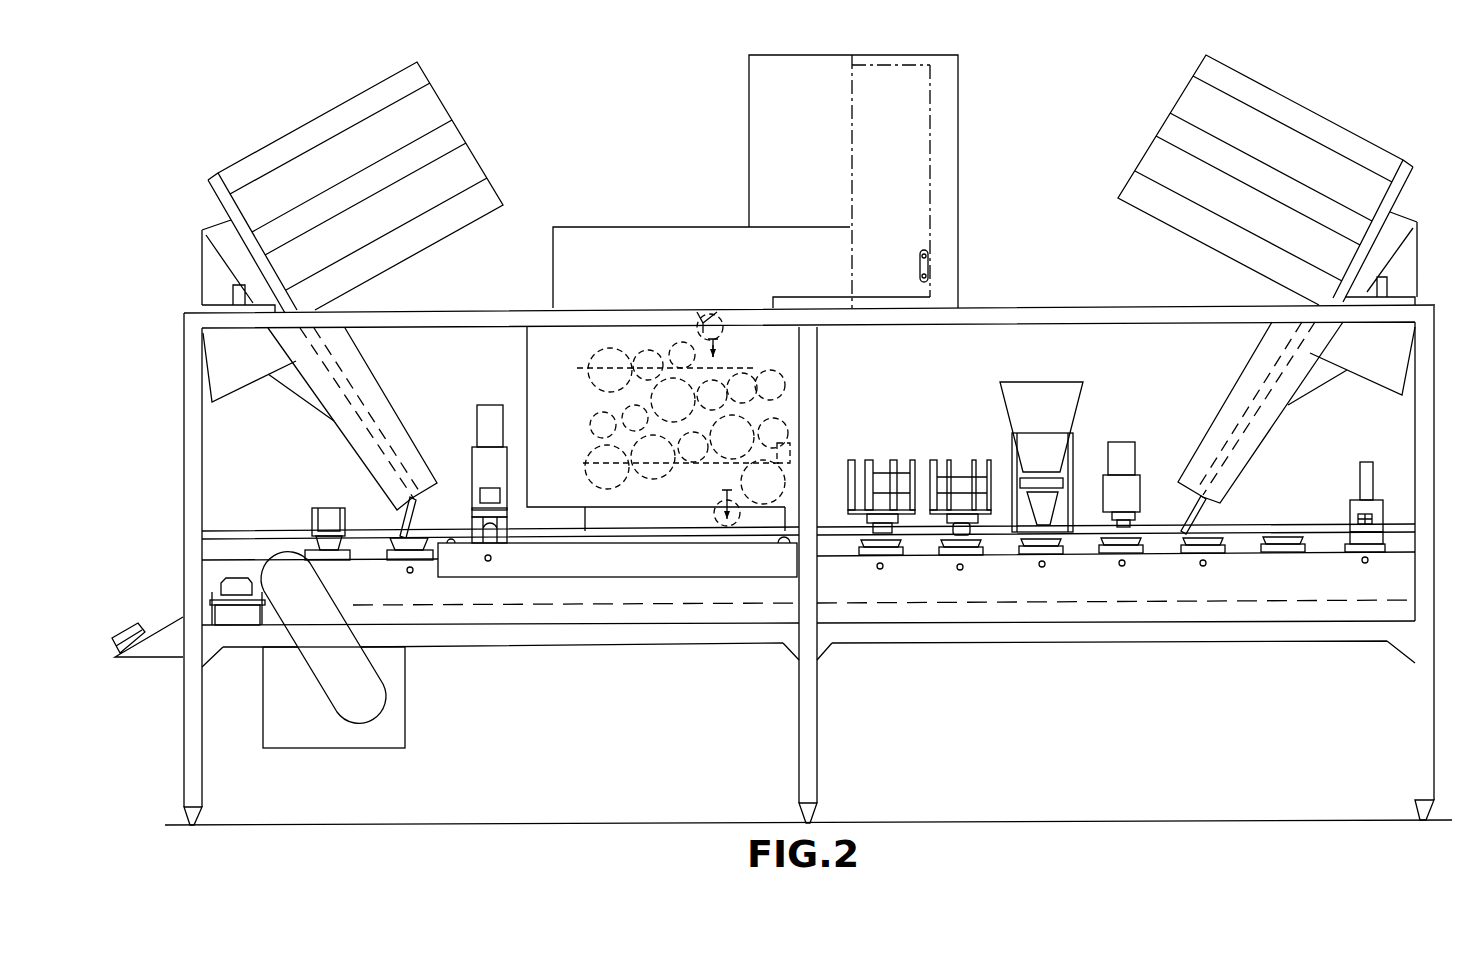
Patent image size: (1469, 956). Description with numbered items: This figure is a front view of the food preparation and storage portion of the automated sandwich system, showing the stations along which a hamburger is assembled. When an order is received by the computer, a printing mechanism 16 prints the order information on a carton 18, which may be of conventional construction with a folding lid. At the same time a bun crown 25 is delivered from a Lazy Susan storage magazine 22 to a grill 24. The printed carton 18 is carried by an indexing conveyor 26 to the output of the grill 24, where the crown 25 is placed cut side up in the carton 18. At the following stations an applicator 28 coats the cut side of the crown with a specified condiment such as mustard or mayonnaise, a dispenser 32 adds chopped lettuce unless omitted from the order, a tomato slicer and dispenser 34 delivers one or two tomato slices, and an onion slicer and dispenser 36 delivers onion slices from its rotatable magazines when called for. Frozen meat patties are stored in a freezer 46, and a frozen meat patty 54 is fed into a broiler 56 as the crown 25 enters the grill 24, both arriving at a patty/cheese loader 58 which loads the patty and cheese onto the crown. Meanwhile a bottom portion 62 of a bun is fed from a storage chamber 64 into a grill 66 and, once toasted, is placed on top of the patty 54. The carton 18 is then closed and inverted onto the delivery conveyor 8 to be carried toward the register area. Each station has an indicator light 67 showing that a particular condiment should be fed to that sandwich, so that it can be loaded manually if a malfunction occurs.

The delivery conveyor 8 is at (235, 607).
The printing mechanism 16 is at (1347, 492).
The carton 18 is at (311, 523).
The storage magazine 22 is at (1330, 88).
The grill 24 is at (1311, 446).
The bun crown 25 is at (1197, 515).
The indexing conveyor 26 is at (1188, 553).
The applicator 28 is at (1184, 446).
The dispenser 32 is at (1124, 418).
The tomato slicer and dispenser 34 is at (1001, 450).
The onion slicer and dispenser 36 is at (929, 450).
The freezer 46 is at (747, 131).
The frozen meat patty 54 is at (699, 312).
The broiler 56 is at (793, 385).
The patty/cheese loader 58 is at (504, 432).
The bottom portion of bun 62 is at (400, 523).
The storage chamber 64 is at (492, 106).
The grill 66 is at (408, 360).
The indicator light 67 is at (883, 569).